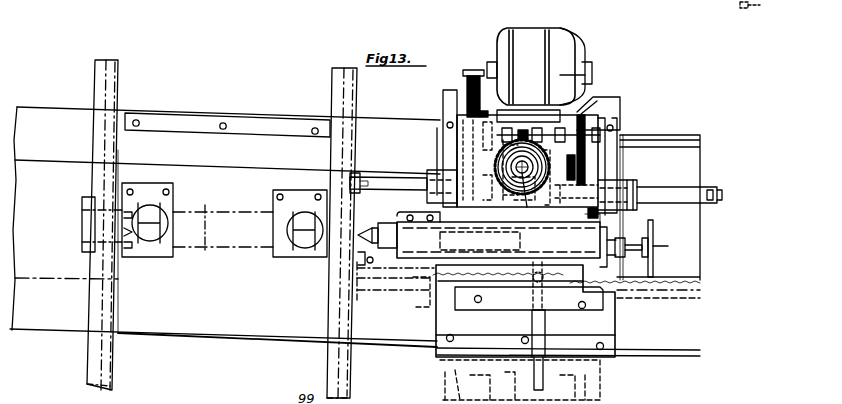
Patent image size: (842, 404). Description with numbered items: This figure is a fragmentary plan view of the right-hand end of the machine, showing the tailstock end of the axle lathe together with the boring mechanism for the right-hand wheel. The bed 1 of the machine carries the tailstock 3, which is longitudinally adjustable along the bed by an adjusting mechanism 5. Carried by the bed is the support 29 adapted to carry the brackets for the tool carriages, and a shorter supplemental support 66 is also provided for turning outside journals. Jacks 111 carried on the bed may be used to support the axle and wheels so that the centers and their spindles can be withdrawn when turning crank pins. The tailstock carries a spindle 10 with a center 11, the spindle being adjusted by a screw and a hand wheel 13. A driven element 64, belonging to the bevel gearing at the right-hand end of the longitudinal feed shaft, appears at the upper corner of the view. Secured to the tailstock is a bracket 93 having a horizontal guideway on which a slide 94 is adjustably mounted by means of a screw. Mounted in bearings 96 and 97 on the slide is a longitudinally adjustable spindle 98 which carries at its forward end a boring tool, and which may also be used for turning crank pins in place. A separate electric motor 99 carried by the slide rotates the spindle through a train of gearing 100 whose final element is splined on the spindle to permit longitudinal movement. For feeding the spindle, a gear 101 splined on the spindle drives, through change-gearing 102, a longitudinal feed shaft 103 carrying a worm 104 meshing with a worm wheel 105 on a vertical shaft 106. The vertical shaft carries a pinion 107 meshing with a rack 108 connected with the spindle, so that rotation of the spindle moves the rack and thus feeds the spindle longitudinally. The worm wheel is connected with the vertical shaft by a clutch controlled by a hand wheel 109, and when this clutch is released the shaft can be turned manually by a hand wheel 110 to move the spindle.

The bed 1 is at (186, 336).
The tailstock 3 is at (600, 326).
The adjusting mechanism 5 is at (546, 321).
The spindle 10 is at (390, 226).
The center 11 is at (362, 236).
The hand wheel 13 is at (655, 236).
The support 29 is at (179, 241).
The element 64 is at (761, 11).
The supplemental support 66 is at (401, 330).
The bracket 93 is at (600, 105).
The slide 94 is at (618, 128).
The bearing 96 is at (625, 185).
The bearing 97 is at (434, 172).
The spindle 98 is at (385, 181).
The electric motor 99 is at (538, 40).
The train of gearing 100 is at (467, 92).
The gear 101 is at (580, 212).
The change-gearing 102 is at (607, 110).
The longitudinal feed shaft 103 is at (560, 134).
The worm 104 is at (515, 134).
The worm wheel 105 is at (506, 150).
The vertical shaft 106 is at (500, 165).
The pinion 107 is at (506, 178).
The rack 108 is at (578, 151).
The hand wheel 109 is at (512, 190).
The hand wheel 110 is at (528, 182).
The jacks 111 is at (158, 215).